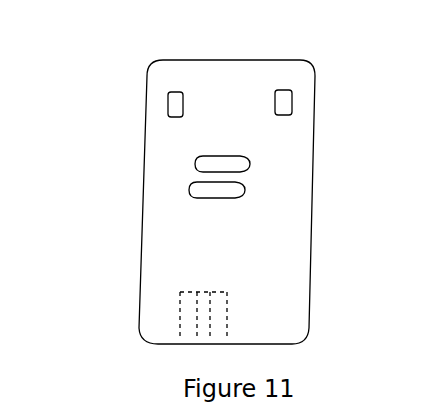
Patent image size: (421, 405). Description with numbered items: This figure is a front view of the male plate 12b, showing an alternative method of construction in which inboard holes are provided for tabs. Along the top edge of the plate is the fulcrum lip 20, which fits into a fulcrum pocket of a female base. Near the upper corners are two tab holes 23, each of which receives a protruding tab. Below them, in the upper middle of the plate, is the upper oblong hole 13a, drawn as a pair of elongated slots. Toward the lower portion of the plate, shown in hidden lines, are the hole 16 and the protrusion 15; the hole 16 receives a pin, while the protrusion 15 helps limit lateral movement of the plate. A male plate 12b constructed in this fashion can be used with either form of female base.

The fulcrum lip 20 is at (218, 60).
The tab hole 23 is at (168, 107).
The upper oblong hole 13a is at (250, 162).
The male plate 12b is at (182, 252).
The hole 16 is at (205, 306).
The protrusion 15 is at (220, 322).